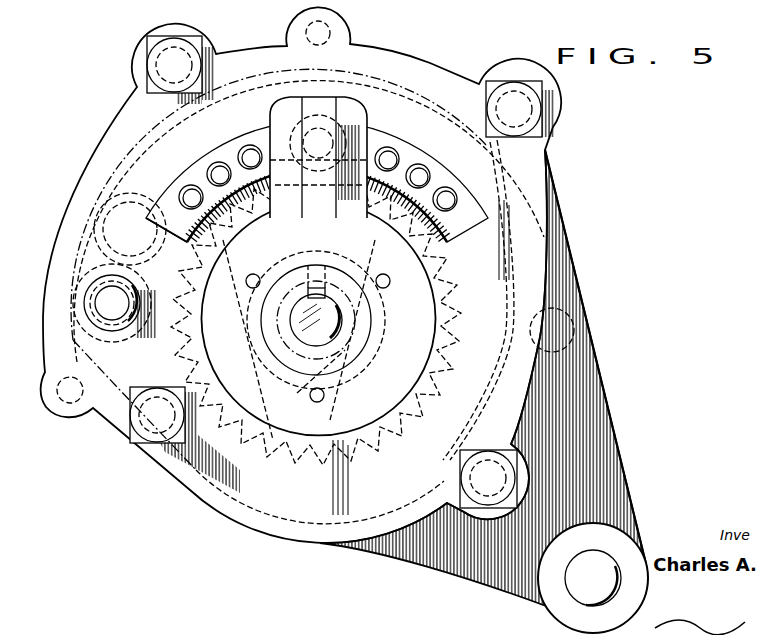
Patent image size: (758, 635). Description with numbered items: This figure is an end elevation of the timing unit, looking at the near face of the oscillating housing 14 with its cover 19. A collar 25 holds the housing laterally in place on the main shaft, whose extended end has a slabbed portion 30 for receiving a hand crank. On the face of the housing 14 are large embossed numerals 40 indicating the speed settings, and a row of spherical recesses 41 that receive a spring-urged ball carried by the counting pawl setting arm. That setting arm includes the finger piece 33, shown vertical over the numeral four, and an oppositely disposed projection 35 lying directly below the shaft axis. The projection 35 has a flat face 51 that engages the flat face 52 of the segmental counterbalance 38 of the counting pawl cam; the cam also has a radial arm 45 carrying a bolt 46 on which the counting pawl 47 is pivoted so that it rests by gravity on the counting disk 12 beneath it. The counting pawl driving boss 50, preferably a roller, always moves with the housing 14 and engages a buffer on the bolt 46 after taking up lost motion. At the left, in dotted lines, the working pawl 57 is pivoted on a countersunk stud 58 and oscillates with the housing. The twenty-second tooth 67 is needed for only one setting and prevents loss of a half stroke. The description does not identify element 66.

The counting disk 12 is at (467, 292).
The housing 14 is at (122, 370).
The cover 19 is at (546, 172).
The collar 25 is at (366, 339).
The slabbed portion 30 is at (337, 320).
The finger piece 33 is at (336, 100).
The projection 35 is at (299, 370).
The counterbalance 38 is at (490, 373).
The embossed numerals 40 is at (445, 125).
The spherical recesses 41 is at (453, 206).
The radial arm 45 is at (317, 191).
The bolt 46 is at (257, 48).
The counting pawl 47 is at (320, 286).
The counting pawl driving boss 50 is at (292, 269).
The flat face 51 is at (316, 325).
The flat face 52 is at (327, 394).
The working pawl 57 is at (122, 160).
The countersunk stud 58 is at (66, 205).
The stop 66 is at (190, 262).
The twenty-second tooth 67 is at (306, 214).